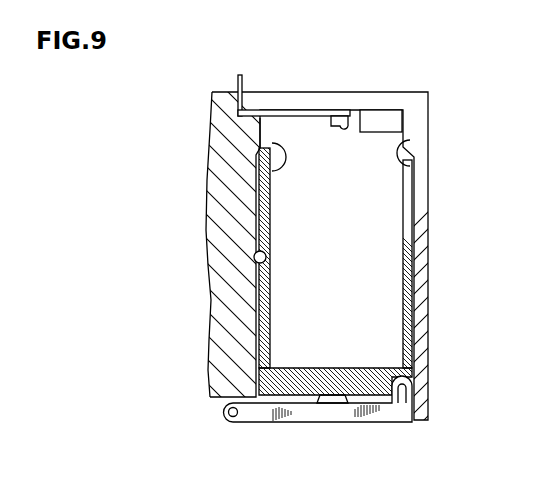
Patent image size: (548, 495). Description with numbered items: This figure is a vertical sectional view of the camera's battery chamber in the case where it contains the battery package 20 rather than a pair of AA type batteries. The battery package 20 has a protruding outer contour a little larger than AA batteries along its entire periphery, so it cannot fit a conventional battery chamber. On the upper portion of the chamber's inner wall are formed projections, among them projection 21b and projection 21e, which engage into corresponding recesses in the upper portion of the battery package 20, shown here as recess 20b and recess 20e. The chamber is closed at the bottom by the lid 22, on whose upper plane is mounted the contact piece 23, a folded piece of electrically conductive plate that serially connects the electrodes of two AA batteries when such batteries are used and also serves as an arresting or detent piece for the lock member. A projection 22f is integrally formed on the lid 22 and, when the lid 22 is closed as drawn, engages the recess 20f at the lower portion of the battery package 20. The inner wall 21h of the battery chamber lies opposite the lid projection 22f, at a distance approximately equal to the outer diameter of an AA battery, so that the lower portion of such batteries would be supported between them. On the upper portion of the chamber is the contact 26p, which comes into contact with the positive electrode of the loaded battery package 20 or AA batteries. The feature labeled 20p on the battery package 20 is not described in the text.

The battery package 20 is at (413, 225).
The recess 20b is at (410, 172).
The recess 20e is at (275, 172).
The recess 20f is at (392, 392).
The projection 20p is at (343, 122).
The projection 21b is at (408, 116).
The projection 21e is at (260, 132).
The inner wall 21h is at (258, 268).
The lid 22 is at (288, 414).
The projection 22f is at (408, 388).
The contact piece 23 is at (335, 404).
The contact 26p is at (297, 112).